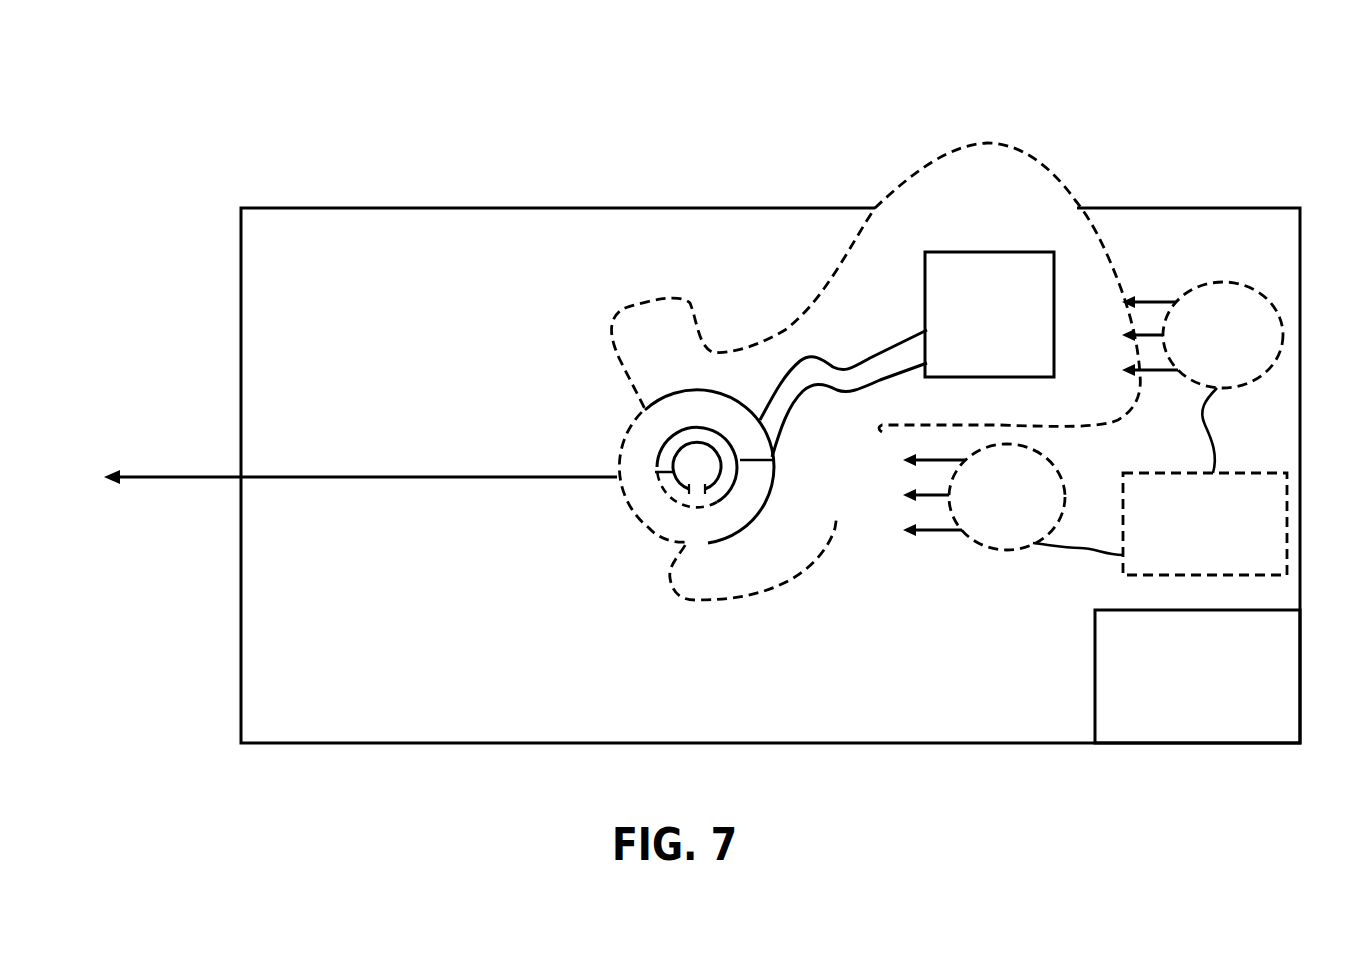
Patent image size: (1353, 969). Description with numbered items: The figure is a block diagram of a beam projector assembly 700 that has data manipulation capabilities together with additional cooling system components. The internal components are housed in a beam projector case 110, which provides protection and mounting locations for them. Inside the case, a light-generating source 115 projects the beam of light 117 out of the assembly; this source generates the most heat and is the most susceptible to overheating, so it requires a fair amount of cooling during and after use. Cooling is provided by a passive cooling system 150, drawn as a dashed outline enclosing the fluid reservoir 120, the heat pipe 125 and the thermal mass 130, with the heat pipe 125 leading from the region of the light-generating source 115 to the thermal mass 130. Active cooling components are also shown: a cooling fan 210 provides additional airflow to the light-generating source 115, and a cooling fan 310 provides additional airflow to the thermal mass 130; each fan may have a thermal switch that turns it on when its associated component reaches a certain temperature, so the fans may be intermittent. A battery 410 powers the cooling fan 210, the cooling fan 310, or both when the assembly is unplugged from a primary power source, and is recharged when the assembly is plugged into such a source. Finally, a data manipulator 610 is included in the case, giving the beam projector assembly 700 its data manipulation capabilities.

The beam projector assembly 700 is at (696, 58).
The beam projector case 110 is at (377, 208).
The light-generating source 115 is at (687, 473).
The beam of light 117 is at (208, 477).
The fluid reservoir 120 is at (697, 392).
The heat pipe 125 is at (783, 385).
The thermal mass 130 is at (1006, 353).
The passive cooling system 150 is at (1079, 192).
The cooling fan 210 is at (1026, 522).
The cooling fan 310 is at (1243, 365).
The battery 410 is at (1223, 553).
The data manipulator 610 is at (1213, 702).